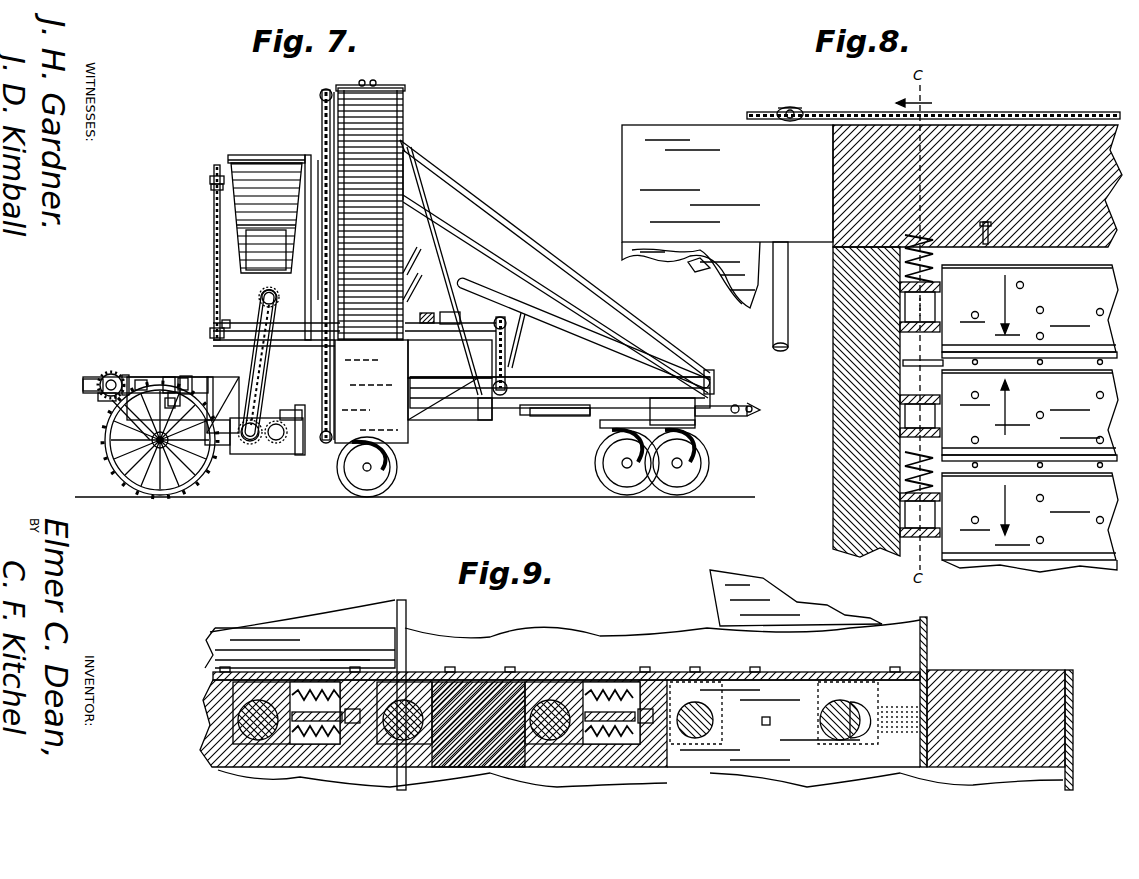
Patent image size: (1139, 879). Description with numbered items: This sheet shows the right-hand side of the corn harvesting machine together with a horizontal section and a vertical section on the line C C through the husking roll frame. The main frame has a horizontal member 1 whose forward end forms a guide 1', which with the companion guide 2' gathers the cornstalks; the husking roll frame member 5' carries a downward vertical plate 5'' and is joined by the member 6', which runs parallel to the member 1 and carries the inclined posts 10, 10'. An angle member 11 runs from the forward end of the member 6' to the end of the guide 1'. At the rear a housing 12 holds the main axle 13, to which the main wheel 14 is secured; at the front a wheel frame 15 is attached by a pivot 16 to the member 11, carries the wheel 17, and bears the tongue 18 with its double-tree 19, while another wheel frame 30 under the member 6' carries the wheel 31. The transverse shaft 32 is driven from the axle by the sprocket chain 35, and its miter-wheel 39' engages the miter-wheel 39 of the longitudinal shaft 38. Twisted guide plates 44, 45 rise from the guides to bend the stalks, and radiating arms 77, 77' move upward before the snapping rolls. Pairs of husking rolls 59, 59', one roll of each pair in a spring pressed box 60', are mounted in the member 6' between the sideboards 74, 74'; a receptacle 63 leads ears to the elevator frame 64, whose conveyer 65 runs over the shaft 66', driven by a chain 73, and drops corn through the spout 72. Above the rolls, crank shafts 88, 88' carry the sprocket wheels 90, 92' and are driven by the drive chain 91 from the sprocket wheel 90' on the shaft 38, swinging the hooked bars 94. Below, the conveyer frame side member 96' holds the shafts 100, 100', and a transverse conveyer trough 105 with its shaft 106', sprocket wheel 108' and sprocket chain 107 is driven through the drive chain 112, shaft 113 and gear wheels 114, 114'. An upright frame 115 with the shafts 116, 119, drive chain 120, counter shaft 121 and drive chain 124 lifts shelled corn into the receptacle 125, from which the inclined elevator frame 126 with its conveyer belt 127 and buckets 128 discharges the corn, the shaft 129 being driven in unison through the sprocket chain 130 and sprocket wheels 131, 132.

In FIG. 7, the horizontal frame member 1 is at (93, 365).
In FIG. 7, the guide 1' is at (560, 414).
In FIG. 7, the guide 2' is at (718, 382).
In FIG. 8, the husking roll frame member 5' is at (979, 186).
In FIG. 9, the husking roll frame member 5' is at (996, 703).
In FIG. 9, the vertical plate 5'' is at (1064, 713).
In FIG. 7, the frame member 6' is at (334, 391).
In FIG. 8, the frame member 6' is at (847, 402).
In FIG. 9, the frame member 6' is at (560, 681).
In FIG. 7, the inclined post 10 is at (444, 271).
In FIG. 7, the inclined post 10' is at (306, 213).
In FIG. 7, the angle member 11 is at (553, 416).
In FIG. 7, the housing 12 is at (140, 430).
In FIG. 7, the main axle 13 is at (172, 392).
In FIG. 7, the main wheel 14 is at (183, 488).
In FIG. 7, the wheel frame 15 is at (650, 413).
In FIG. 7, the pivot 16 is at (655, 379).
In FIG. 7, the wheel 17 is at (597, 472).
In FIG. 7, the tongue 18 is at (744, 416).
In FIG. 7, the double-tree 19 is at (742, 405).
In FIG. 7, the wheel frame 30 is at (397, 458).
In FIG. 7, the wheel 31 is at (390, 482).
In FIG. 7, the transverse shaft 32 is at (83, 385).
In FIG. 7, the sprocket chain 35 is at (105, 395).
In FIG. 7, the longitudinal shaft 38 is at (165, 380).
In FIG. 7, the miter-wheel 39 is at (111, 360).
In FIG. 7, the miter-wheel 39' is at (84, 370).
In FIG. 7, the guide plate 44 is at (527, 243).
In FIG. 7, the guide plate 45 is at (565, 335).
In FIG. 8, the husking roll 59 is at (1030, 471).
In FIG. 9, the husking roll 59 is at (504, 691).
In FIG. 8, the husking roll 59' is at (1030, 315).
In FIG. 9, the husking roll 59' is at (848, 687).
In FIG. 8, the spring pressed box 60' is at (945, 379).
In FIG. 9, the spring pressed box 60' is at (605, 690).
In FIG. 7, the receptacle 63 is at (292, 455).
In FIG. 7, the elevator frame 64 is at (229, 156).
In FIG. 7, the conveyer 65 is at (258, 155).
In FIG. 7, the shaft 66' is at (195, 176).
In FIG. 7, the spout 72 is at (248, 263).
In FIG. 7, the chain 73 is at (214, 228).
In FIG. 7, the sideboard 74 is at (308, 247).
In FIG. 9, the sideboard 74' is at (943, 689).
In FIG. 7, the arms 77 is at (415, 252).
In FIG. 7, the arms 77' is at (424, 291).
In FIG. 7, the shaft 88 is at (472, 329).
In FIG. 7, the shaft 88' is at (228, 365).
In FIG. 7, the sprocket wheel 90 is at (508, 335).
In FIG. 7, the sprocket wheel 90' is at (505, 434).
In FIG. 7, the drive chain 91 is at (514, 355).
In FIG. 7, the sprocket wheel 92' is at (583, 324).
In FIG. 7, the bar 94 is at (420, 395).
In FIG. 7, the side member 96' is at (478, 445).
In FIG. 7, the rotative shaft 100 is at (507, 468).
In FIG. 7, the rotative shaft 100' is at (236, 472).
In FIG. 8, the conveyer trough 105 is at (718, 140).
In FIG. 7, the rotative shaft 106' is at (303, 472).
In FIG. 8, the rotative shaft 106' is at (795, 221).
In FIG. 7, the sprocket chain 107 is at (190, 496).
In FIG. 8, the sprocket chain 107 is at (968, 112).
In FIG. 8, the sprocket wheel 108' is at (814, 102).
In FIG. 7, the drive chain 112 is at (140, 488).
In FIG. 7, the shaft 113 is at (172, 321).
In FIG. 7, the gear wheel 114 is at (87, 469).
In FIG. 7, the gear wheel 114' is at (180, 372).
In FIG. 7, the upright frame 115 is at (285, 408).
In FIG. 8, the upright frame 115 is at (740, 258).
In FIG. 9, the upright frame 115 is at (735, 590).
In FIG. 7, the rotative shaft 116 is at (249, 445).
In FIG. 8, the rotative shaft 116 is at (688, 262).
In FIG. 7, the shaft 119 is at (262, 297).
In FIG. 7, the drive chain 120 is at (210, 330).
In FIG. 7, the counter shaft 121 is at (306, 458).
In FIG. 7, the drive chain 124 is at (274, 455).
In FIG. 7, the receptacle 125 is at (408, 400).
In FIG. 9, the receptacle 125 is at (618, 640).
In FIG. 7, the elevator frame 126 is at (405, 118).
In FIG. 9, the elevator frame 126 is at (407, 615).
In FIG. 7, the conveyer belt 127 is at (393, 158).
In FIG. 9, the conveyer belt 127 is at (360, 625).
In FIG. 7, the buckets 128 is at (388, 150).
In FIG. 9, the buckets 128 is at (272, 635).
In FIG. 7, the shaft 129 is at (320, 96).
In FIG. 7, the sprocket chain 130 is at (322, 113).
In FIG. 7, the sprocket wheel 131 is at (330, 475).
In FIG. 7, the sprocket wheel 132 is at (211, 188).